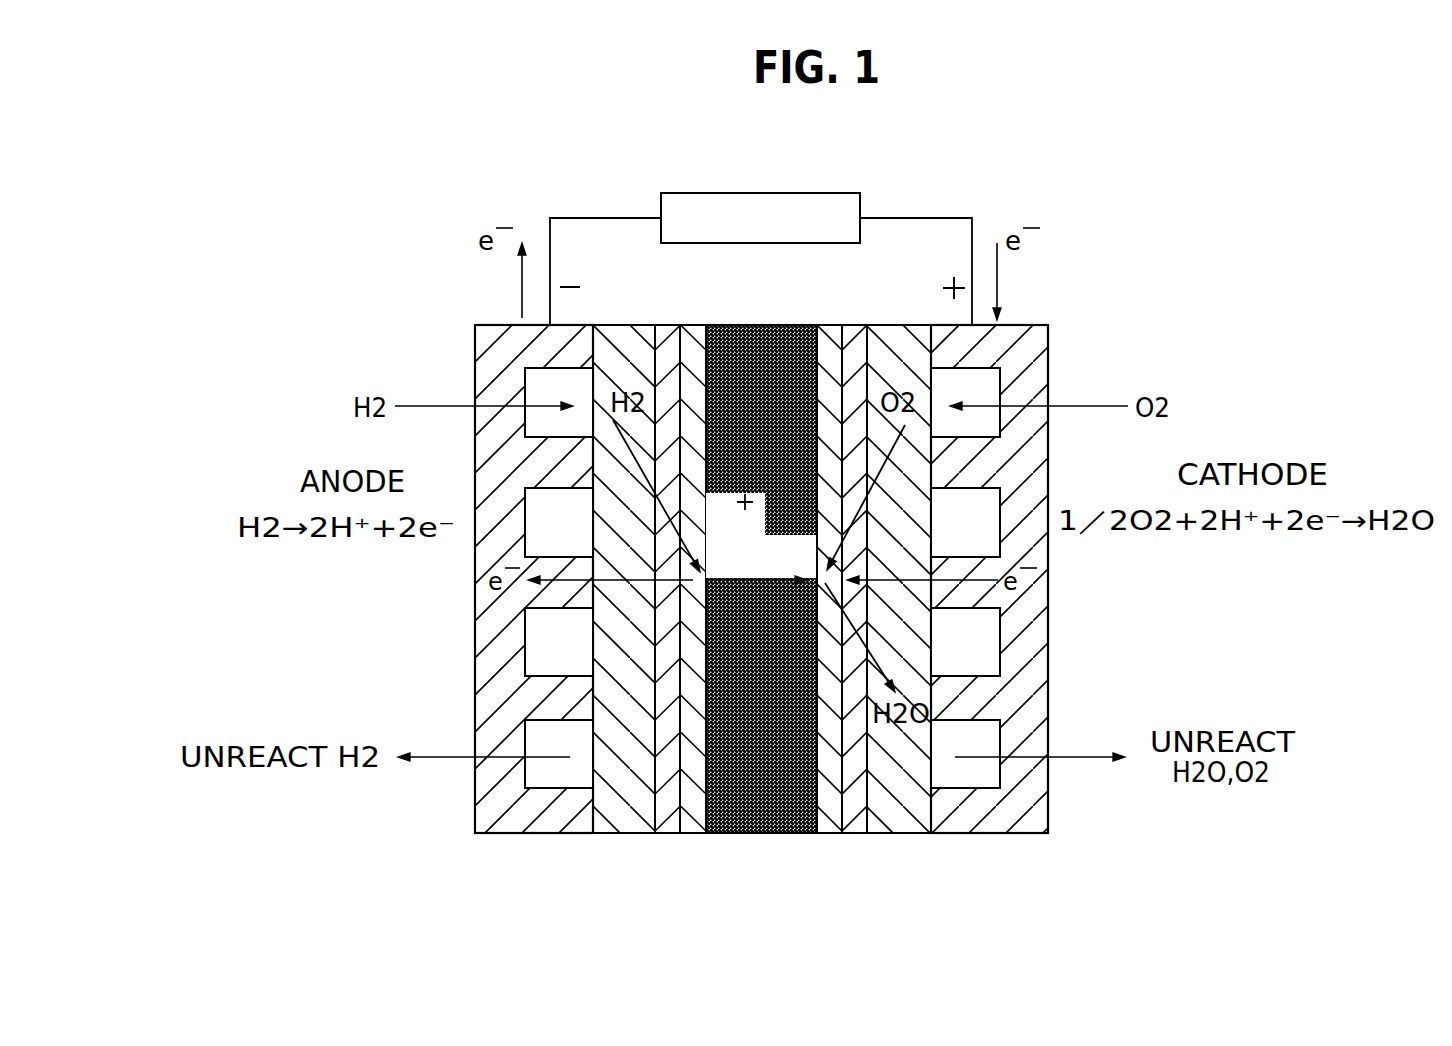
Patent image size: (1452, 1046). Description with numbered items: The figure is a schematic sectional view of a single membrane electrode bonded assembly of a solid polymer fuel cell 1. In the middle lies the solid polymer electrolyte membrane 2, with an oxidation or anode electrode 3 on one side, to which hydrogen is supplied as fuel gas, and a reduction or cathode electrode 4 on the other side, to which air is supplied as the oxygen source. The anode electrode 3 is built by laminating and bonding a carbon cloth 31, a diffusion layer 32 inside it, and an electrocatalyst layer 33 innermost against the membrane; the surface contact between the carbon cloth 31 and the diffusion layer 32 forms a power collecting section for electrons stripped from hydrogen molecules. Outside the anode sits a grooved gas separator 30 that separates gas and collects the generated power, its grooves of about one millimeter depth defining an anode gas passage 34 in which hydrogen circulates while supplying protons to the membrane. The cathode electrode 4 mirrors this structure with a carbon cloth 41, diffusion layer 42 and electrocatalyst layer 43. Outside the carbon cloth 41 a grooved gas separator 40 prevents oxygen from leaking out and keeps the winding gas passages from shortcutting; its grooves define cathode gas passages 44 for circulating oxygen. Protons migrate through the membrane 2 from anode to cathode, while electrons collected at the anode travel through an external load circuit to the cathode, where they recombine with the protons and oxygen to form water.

The fuel cell 1 is at (878, 202).
The solid polymer electrolyte membrane 2 is at (722, 336).
The anode electrode 3 is at (556, 607).
The cathode electrode 4 is at (968, 602).
The grooved gas separator 30 is at (478, 579).
The carbon cloth 31 is at (627, 800).
The diffusion layer 32 is at (670, 813).
The electrocatalyst layer 33 is at (697, 813).
The anode gas passage 34 is at (547, 777).
The grooved gas separator 40 is at (1037, 593).
The carbon cloth 41 is at (893, 812).
The diffusion layer 42 is at (855, 812).
The electrocatalyst layer 43 is at (833, 812).
The cathode gas passage 44 is at (968, 676).